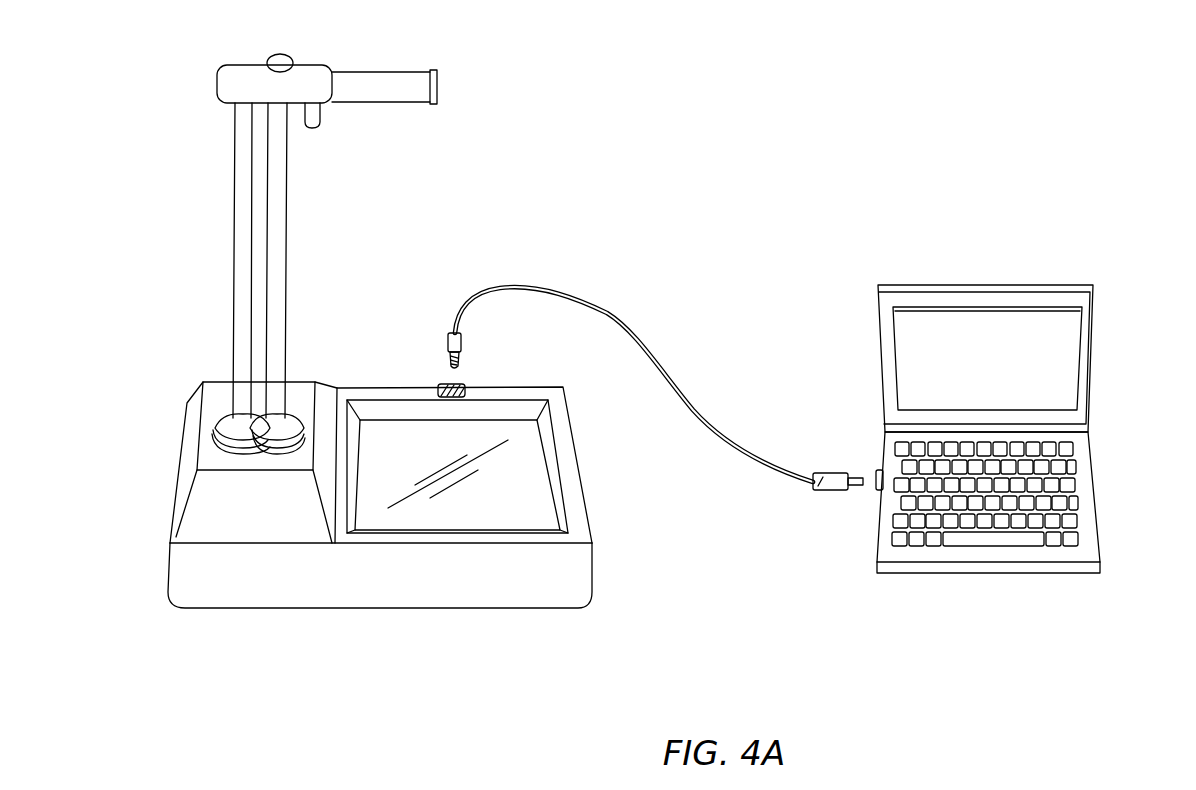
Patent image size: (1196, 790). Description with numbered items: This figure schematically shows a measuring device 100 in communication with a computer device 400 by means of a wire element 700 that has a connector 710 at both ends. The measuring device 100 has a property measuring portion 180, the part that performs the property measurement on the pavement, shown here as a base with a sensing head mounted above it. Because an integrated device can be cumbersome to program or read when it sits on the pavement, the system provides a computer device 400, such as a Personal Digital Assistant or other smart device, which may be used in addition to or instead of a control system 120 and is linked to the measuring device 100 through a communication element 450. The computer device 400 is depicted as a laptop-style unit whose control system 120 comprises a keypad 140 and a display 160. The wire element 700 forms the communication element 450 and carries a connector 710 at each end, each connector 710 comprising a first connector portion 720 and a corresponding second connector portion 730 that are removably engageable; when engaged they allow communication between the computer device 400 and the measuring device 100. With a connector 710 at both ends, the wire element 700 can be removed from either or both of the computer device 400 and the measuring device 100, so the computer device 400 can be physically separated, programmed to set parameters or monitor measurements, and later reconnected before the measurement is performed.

The measuring device 100 is at (713, 146).
The property measuring portion 180 is at (347, 585).
The communication element 450 is at (633, 303).
The wire element 700 is at (660, 365).
The connector 710 is at (423, 335).
The first connector portion 720 is at (461, 348).
The second connector portion 730 is at (438, 386).
The computer device 400 is at (1007, 248).
The control system 120 is at (1062, 302).
The display 160 is at (1062, 368).
The keypad 140 is at (1037, 518).